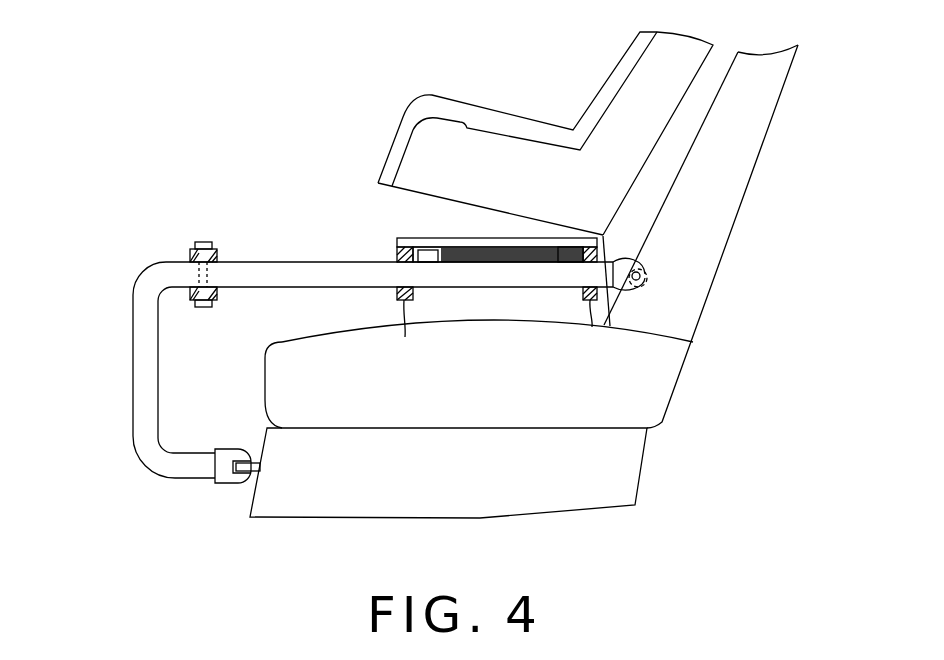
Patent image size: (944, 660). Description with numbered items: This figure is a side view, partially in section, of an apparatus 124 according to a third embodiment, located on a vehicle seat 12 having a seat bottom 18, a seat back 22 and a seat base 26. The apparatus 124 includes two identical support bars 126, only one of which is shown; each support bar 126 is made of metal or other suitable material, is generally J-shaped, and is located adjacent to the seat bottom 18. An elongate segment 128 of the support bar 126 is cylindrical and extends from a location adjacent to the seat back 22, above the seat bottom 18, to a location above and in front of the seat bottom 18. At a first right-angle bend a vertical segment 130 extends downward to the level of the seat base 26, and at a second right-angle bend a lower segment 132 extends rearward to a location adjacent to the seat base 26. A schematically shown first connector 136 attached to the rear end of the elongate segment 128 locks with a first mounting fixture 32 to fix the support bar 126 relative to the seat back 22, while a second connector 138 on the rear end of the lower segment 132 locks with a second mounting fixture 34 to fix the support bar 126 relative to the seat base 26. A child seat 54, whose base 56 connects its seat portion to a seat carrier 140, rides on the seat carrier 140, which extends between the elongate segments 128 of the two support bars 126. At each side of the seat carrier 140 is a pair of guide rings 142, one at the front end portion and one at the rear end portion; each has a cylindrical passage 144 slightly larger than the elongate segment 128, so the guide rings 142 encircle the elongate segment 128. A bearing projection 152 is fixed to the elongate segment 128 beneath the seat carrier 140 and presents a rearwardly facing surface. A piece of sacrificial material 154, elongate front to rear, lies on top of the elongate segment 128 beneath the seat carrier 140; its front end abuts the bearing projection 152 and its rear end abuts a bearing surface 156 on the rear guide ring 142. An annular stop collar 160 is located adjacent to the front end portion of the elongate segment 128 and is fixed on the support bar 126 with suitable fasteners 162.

The vehicle seat 12 is at (740, 236).
The seat bottom 18 is at (670, 378).
The seat back 22 is at (741, 178).
The seat base 26 is at (632, 466).
The first mounting fixture 32 is at (648, 282).
The second mounting fixture 34 is at (216, 456).
The child seat 54 is at (545, 133).
The base 56 is at (450, 226).
The apparatus 124 is at (378, 319).
The support bar 126 is at (327, 364).
The elongate segment 128 is at (247, 272).
The vertical segment 130 is at (143, 383).
The lower segment 132 is at (182, 472).
The first connector 136 is at (663, 275).
The second connector 138 is at (237, 483).
The seat carrier 140 is at (513, 267).
The guide rings 142 is at (400, 300).
The cylindrical passage 144 is at (403, 293).
The bearing projection 152 is at (432, 258).
The sacrificial material 154 is at (503, 237).
The bearing surface 156 is at (563, 237).
The stop collar 160 is at (192, 252).
The fasteners 162 is at (203, 242).